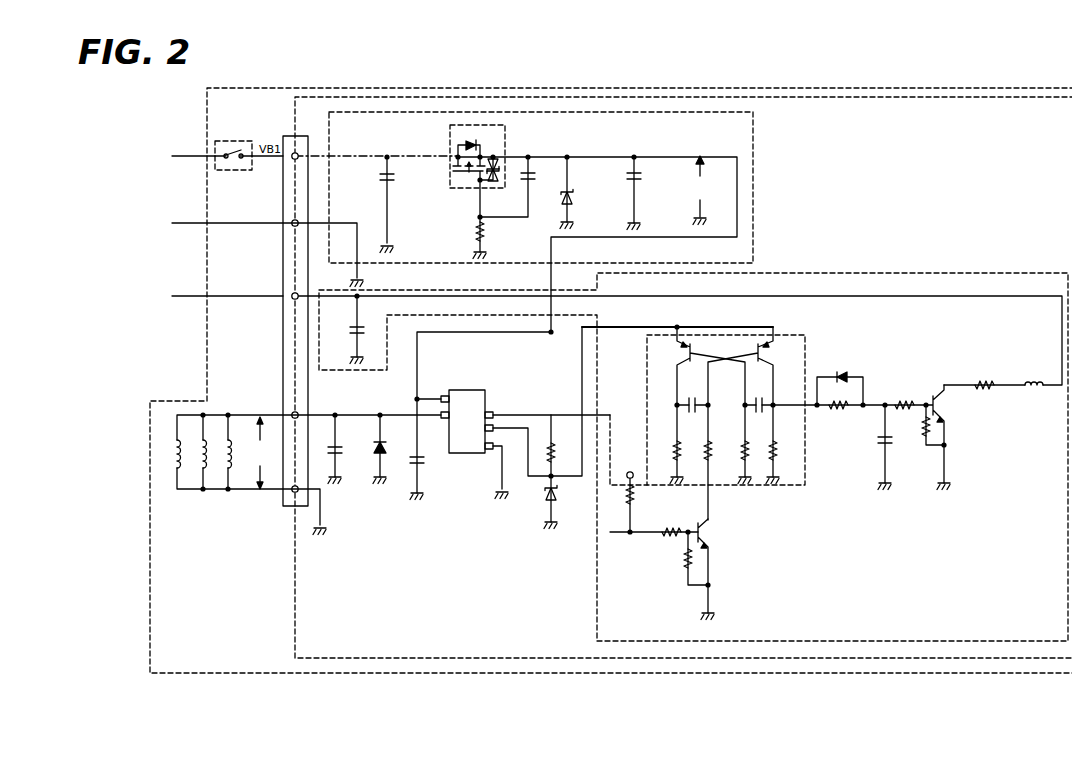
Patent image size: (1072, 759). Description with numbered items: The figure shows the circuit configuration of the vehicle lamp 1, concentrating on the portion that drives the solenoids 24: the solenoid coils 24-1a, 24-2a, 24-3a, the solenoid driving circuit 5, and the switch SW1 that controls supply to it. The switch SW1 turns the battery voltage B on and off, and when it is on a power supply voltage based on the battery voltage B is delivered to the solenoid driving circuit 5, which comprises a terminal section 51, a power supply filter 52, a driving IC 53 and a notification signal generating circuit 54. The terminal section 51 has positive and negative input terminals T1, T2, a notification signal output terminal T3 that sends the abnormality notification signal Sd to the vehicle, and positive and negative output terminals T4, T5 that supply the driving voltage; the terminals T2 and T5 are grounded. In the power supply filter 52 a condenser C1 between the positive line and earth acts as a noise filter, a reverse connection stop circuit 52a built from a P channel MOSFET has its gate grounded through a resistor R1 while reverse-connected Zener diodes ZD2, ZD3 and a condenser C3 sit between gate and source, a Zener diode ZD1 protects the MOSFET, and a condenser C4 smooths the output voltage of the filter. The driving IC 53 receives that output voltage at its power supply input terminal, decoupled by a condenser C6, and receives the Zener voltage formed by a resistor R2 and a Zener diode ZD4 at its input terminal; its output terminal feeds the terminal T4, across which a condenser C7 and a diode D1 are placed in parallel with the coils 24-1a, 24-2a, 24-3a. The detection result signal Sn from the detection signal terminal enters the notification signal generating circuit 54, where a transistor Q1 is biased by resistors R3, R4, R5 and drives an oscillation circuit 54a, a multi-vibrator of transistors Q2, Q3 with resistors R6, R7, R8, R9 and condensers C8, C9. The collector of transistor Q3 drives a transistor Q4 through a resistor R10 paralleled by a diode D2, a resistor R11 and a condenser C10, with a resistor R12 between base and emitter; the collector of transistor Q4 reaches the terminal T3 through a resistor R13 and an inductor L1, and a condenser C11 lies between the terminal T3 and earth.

The vehicle lamp 1 is at (970, 673).
The solenoid driving circuit 5 is at (295, 640).
The terminal section 51 is at (300, 506).
The power supply filter 52 is at (753, 211).
The reverse connection stop circuit 52a is at (505, 132).
The driving integrated circuit 53 is at (467, 453).
The notification signal generating circuit 54 is at (597, 573).
The oscillation circuit 54a is at (805, 478).
The solenoid coil 24-1a is at (231, 462).
The solenoid coil 24-2a is at (207, 436).
The solenoid coil 24-3a is at (180, 464).
The solenoid 24 is at (298, 456).
The positive electrode side input terminal T1 is at (295, 153).
The negative electrode side input terminal T2 is at (295, 221).
The notification signal output terminal T3 is at (295, 293).
The positive electrode side output terminal T4 is at (295, 413).
The negative electrode side output terminal T5 is at (295, 492).
The battery voltage B is at (191, 156).
The abnormality notification signal Sd is at (198, 296).
The detection result signal Sn is at (573, 414).
The switch SW1 is at (236, 140).
The condenser C1 is at (396, 203).
The condenser C3 is at (516, 185).
The condenser C4 is at (643, 191).
The condenser C6 is at (475, 414).
The condenser C7 is at (326, 447).
The condenser C8 is at (692, 399).
The condenser C9 is at (758, 399).
The condenser C10 is at (873, 447).
The condenser C11 is at (346, 328).
The resistor R1 is at (488, 236).
The resistor R2 is at (560, 447).
The resistor R3 is at (634, 496).
The resistor R4 is at (654, 525).
The resistor R5 is at (686, 558).
The resistor R6 is at (669, 444).
The resistor R7 is at (699, 462).
The resistor R8 is at (737, 444).
The resistor R9 is at (780, 444).
The resistor R10 is at (841, 414).
The resistor R11 is at (907, 397).
The resistor R12 is at (923, 425).
The resistor R13 is at (987, 377).
The Zener diode ZD1 is at (583, 191).
The Zener diode ZD2 is at (498, 168).
The Zener diode ZD3 is at (497, 180).
The Zener diode ZD4 is at (548, 480).
The diode D1 is at (373, 447).
The diode D2 is at (840, 381).
The transistor Q1 is at (715, 569).
The transistor Q2 is at (700, 366).
The transistor Q3 is at (750, 366).
The transistor Q4 is at (946, 437).
The inductor L1 is at (1034, 375).